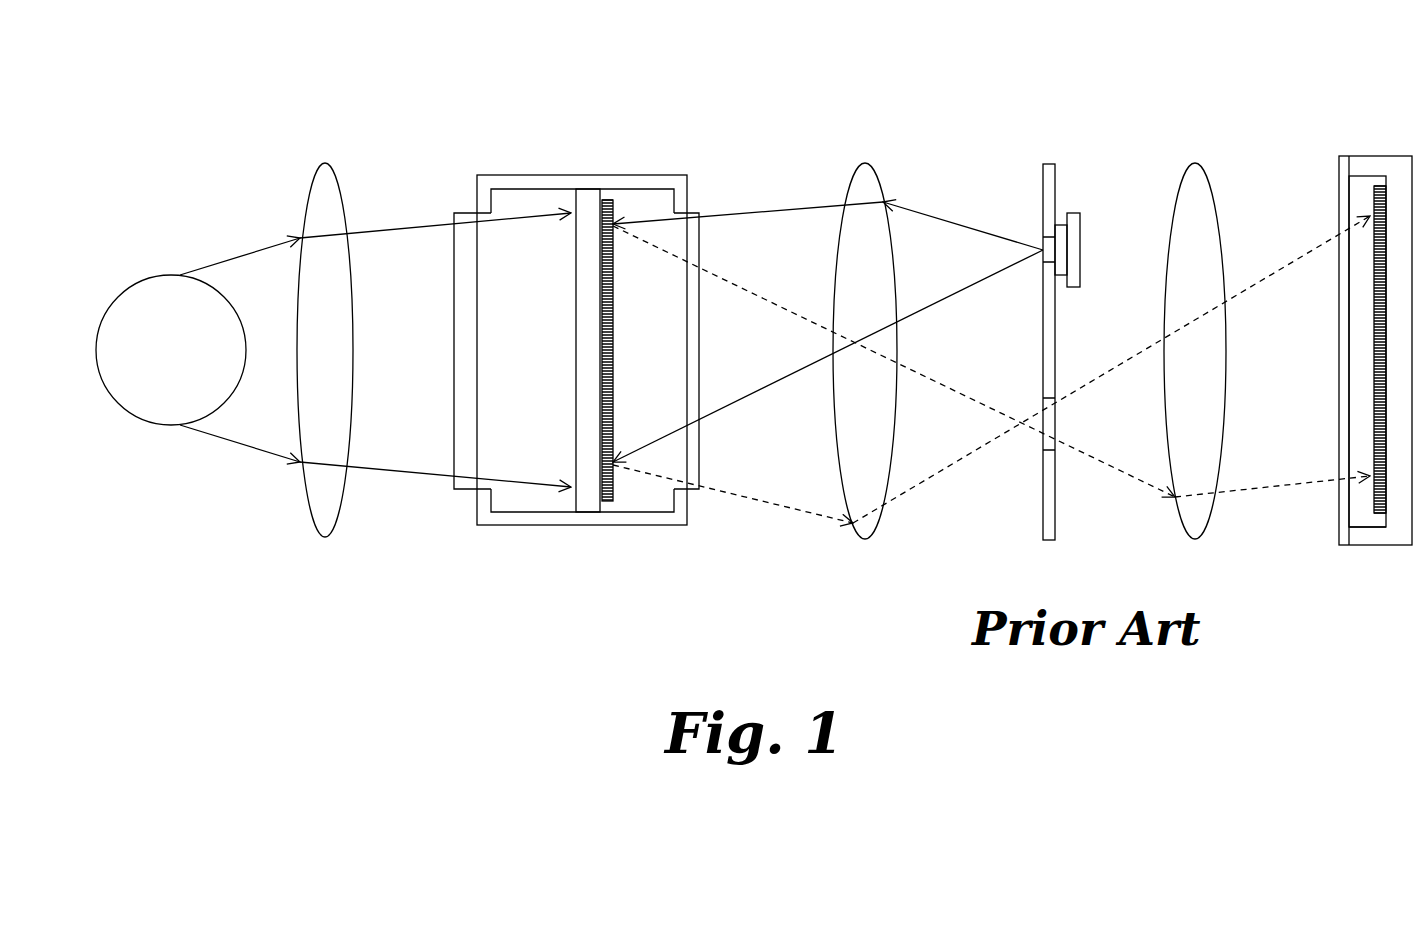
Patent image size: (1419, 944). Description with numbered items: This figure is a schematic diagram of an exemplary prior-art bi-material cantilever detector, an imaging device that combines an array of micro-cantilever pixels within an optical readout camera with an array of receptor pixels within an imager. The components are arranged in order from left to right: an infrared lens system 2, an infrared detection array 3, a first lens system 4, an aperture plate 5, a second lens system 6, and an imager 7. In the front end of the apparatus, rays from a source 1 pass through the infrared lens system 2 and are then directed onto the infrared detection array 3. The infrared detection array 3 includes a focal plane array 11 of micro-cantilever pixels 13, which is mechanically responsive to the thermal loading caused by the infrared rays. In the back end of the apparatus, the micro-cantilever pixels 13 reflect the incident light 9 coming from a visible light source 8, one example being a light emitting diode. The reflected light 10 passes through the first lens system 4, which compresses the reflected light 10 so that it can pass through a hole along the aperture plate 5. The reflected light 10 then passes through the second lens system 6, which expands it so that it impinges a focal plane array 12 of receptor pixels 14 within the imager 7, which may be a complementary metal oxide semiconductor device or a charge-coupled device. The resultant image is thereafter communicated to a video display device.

The source 1 is at (160, 274).
The infrared lens system 2 is at (345, 178).
The infrared detection array 3 is at (514, 164).
The first lens system 4 is at (869, 165).
The aperture plate 5 is at (1043, 164).
The second lens system 6 is at (1214, 177).
The imager 7 is at (1386, 154).
The visible light source 8 is at (1080, 262).
The incident light 9 is at (958, 274).
The reflected light 10 is at (944, 386).
The focal plane array 11 is at (590, 188).
The focal plane array 12 is at (1386, 515).
The micro-cantilever pixels 13 is at (615, 470).
The receptor pixels 14 is at (1380, 506).